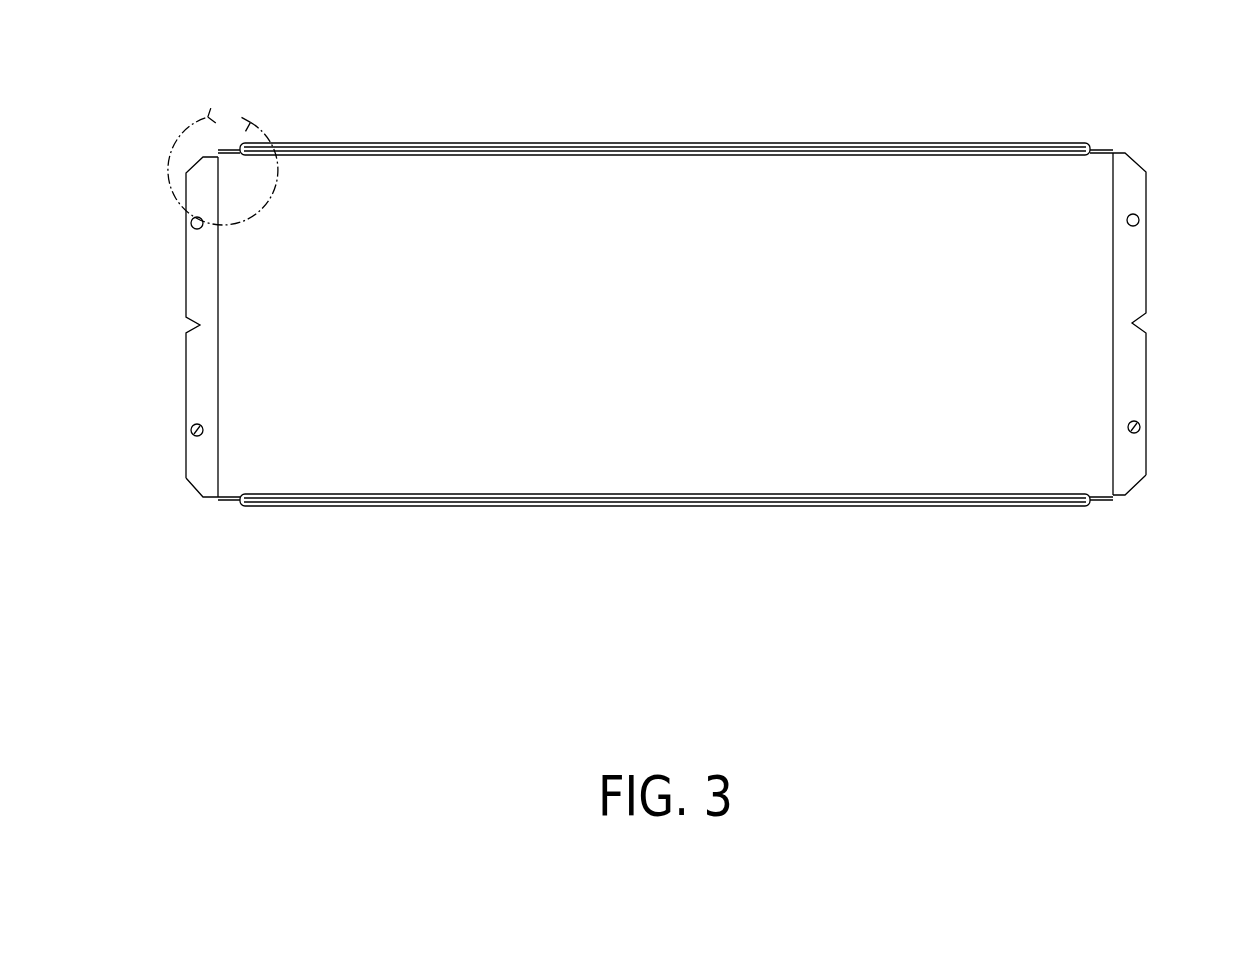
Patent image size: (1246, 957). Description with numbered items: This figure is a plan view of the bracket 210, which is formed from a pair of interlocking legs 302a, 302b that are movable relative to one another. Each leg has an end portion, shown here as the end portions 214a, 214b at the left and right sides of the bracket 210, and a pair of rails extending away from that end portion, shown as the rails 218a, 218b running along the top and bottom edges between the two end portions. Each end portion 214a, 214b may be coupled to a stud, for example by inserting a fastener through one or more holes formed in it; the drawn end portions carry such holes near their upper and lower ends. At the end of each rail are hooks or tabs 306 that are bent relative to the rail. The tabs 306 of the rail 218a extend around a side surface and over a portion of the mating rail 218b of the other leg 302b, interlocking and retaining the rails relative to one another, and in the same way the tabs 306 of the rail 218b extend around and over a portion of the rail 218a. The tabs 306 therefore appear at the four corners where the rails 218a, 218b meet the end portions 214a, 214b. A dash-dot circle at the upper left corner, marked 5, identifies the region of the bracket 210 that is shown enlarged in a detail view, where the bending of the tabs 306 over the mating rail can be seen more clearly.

The bracket 210 is at (857, 78).
The first leg 302a is at (182, 493).
The second leg 302b is at (1152, 150).
The end portion of first leg 214a is at (225, 362).
The end portion of second leg 214b is at (1100, 313).
The rail of first leg 218a is at (665, 157).
The rail of second leg 218b is at (630, 143).
The tabs 306 is at (222, 153).
The detail view reference (FIG. 5) 5 is at (170, 164).